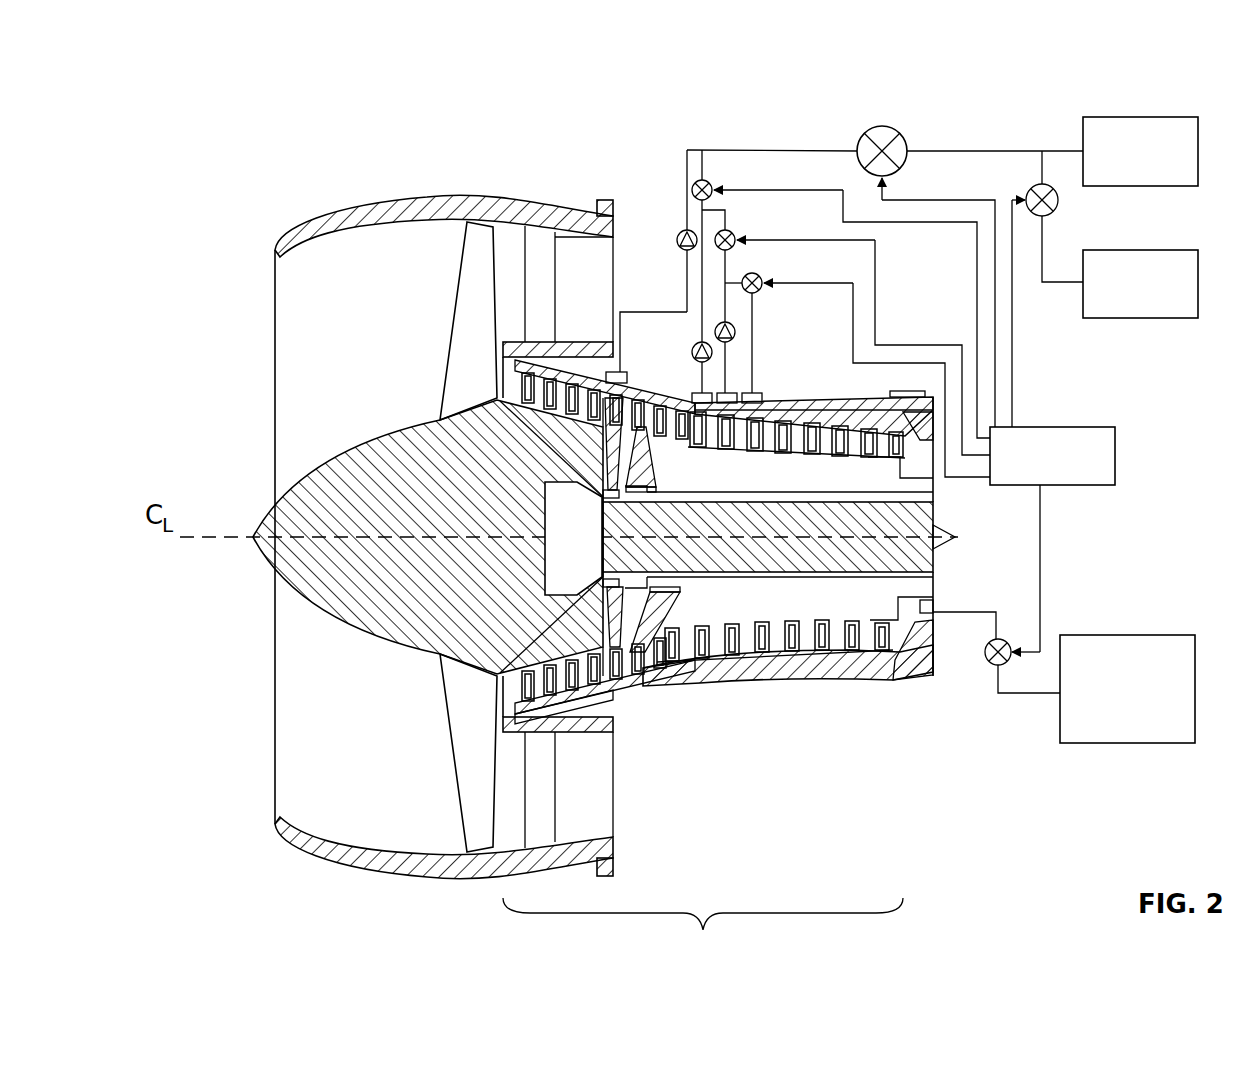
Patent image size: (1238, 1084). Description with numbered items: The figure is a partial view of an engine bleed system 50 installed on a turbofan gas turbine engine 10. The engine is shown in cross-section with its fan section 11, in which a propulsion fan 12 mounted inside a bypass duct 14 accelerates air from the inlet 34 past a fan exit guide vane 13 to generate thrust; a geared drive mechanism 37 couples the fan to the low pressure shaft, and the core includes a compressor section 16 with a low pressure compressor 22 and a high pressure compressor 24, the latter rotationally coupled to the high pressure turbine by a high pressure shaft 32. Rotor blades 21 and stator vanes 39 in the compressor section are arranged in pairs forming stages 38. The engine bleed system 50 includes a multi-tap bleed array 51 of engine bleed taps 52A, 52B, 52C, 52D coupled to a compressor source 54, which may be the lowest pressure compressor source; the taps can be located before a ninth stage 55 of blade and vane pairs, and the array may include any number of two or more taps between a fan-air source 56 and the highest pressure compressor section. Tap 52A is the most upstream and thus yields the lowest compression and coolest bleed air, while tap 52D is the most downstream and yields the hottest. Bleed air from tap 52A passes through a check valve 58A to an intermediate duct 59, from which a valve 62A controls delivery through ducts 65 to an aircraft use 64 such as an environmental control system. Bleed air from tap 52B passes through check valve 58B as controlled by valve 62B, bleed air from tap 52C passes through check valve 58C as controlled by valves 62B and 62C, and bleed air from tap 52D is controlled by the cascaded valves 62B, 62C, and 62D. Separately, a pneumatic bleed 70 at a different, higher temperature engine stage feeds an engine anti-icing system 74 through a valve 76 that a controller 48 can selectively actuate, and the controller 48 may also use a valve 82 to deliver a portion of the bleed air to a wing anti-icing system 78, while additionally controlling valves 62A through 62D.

The gas turbine engine 10 is at (290, 215).
The fan section 11 is at (397, 130).
The propulsion fan 12 is at (455, 352).
The fan exit guide vane 13 is at (545, 275).
The bypass duct 14 is at (605, 300).
The compressor section 16 is at (703, 934).
The rotor blade 21 is at (893, 440).
The low pressure compressor 22 is at (605, 700).
The high pressure compressor 24 is at (738, 682).
The high pressure shaft 32 is at (933, 640).
The inlet 34 is at (290, 350).
The geared drive mechanism 37 is at (560, 558).
The stage 38 is at (505, 690).
The stator vane 39 is at (873, 432).
The controller 48 is at (1080, 427).
The engine bleed system 50 is at (690, 112).
The multi-tap bleed array 51 is at (763, 127).
The engine bleed tap 52A is at (627, 375).
The engine bleed tap 52B is at (690, 398).
The engine bleed tap 52C is at (745, 393).
The engine bleed tap 52D is at (747, 412).
The compressor source 54 is at (598, 383).
The ninth stage 55 is at (838, 390).
The fan-air source 56 is at (512, 283).
The check valve 58A is at (678, 232).
The check valve 58B is at (712, 352).
The check valve 58C is at (737, 330).
The intermediate duct 59 is at (822, 150).
The valve 62A is at (897, 130).
The valve 62B is at (712, 185).
The valve 62C is at (735, 235).
The valve 62D is at (762, 278).
The aircraft use 64 is at (1185, 117).
The ducts 65 is at (1005, 151).
The pneumatic bleed 70 is at (936, 606).
The engine anti-icing system 74 is at (1140, 635).
The valve 76 is at (1008, 640).
The wing anti-icing system 78 is at (1180, 250).
The valve 82 is at (1058, 204).